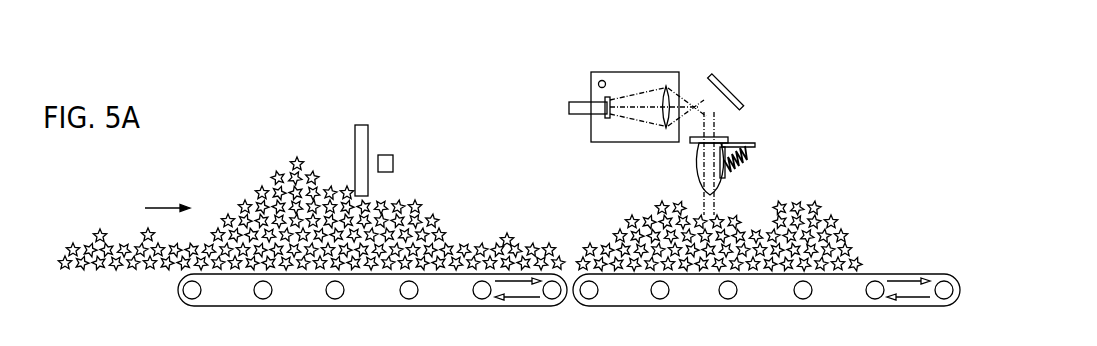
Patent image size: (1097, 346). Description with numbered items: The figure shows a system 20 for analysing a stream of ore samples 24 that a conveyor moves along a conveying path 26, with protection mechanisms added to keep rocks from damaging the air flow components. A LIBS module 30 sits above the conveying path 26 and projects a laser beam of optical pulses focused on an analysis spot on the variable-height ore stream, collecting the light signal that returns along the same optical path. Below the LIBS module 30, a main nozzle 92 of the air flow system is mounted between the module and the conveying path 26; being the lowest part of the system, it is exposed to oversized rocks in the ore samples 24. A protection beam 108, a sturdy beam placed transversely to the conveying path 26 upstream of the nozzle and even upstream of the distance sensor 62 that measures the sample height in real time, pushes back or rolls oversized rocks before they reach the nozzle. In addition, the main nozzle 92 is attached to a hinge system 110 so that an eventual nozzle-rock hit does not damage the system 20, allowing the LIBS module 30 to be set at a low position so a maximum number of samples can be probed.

The system 20 is at (357, 67).
The ore samples 24 is at (503, 240).
The conveying path 26 is at (158, 207).
The LIBS module 30 is at (668, 52).
The distance sensor 62 is at (386, 155).
The main nozzle 92 is at (697, 168).
The protection beam 108 is at (361, 136).
The hinge system 110 is at (746, 157).